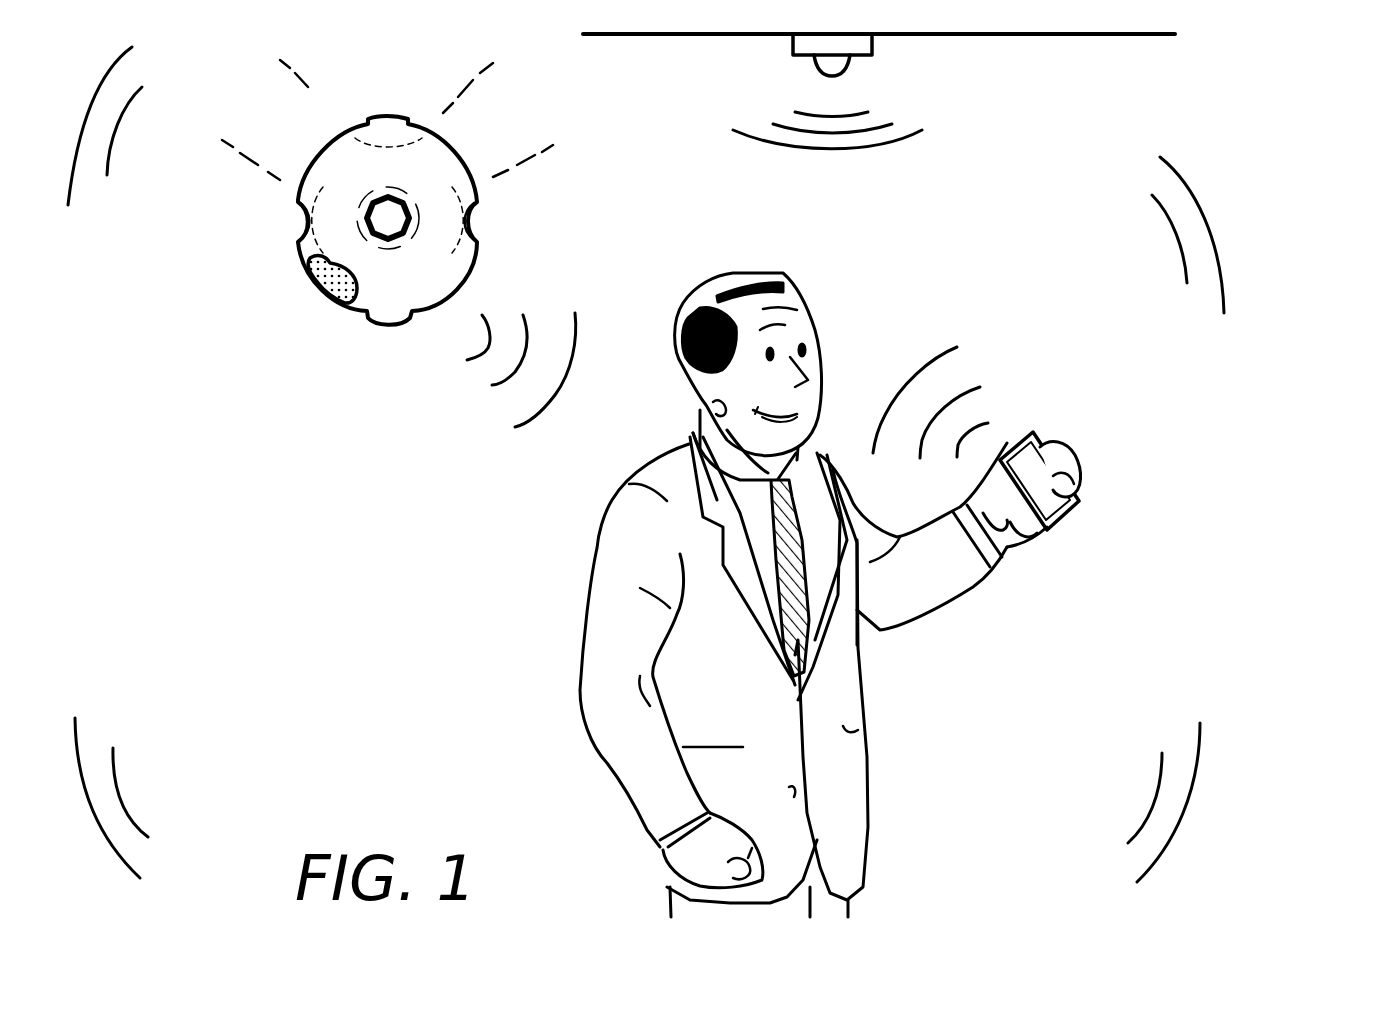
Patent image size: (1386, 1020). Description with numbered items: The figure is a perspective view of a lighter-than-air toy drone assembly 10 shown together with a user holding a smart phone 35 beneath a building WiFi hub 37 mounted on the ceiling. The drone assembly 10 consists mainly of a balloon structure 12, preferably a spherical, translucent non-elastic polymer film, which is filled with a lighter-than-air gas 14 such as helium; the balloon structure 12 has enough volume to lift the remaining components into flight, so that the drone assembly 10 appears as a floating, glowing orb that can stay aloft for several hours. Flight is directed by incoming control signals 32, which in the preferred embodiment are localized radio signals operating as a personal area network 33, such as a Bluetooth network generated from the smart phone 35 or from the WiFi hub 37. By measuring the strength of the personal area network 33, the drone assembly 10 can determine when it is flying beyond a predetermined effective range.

The drone assembly 10 is at (290, 130).
The balloon structure 12 is at (440, 170).
The lighter-than-air gas 14 is at (308, 262).
The control signals 32 is at (915, 367).
The personal area network 33 is at (1127, 262).
The smart phone 35 is at (1030, 437).
The building WiFi hub 37 is at (867, 56).